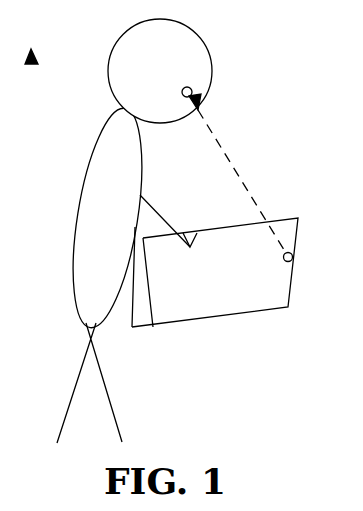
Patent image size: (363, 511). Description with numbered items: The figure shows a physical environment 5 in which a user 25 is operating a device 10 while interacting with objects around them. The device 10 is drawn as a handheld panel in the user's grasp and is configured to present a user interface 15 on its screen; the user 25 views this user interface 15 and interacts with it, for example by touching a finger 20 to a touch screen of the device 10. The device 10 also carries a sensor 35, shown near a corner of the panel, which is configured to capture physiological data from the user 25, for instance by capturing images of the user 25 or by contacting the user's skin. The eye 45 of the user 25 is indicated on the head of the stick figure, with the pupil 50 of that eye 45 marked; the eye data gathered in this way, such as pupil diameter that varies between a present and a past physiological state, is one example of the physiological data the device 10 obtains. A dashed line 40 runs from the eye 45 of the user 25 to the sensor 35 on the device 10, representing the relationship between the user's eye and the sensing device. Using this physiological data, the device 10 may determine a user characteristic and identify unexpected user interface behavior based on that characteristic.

The physical environment 5 is at (31, 49).
The device 10 is at (163, 324).
The user interface 15 is at (208, 279).
The finger 20 is at (190, 240).
The user 25 is at (75, 250).
The sensor 35 is at (292, 256).
The gaze direction line 40 is at (237, 173).
The eye 45 is at (182, 91).
The pupil 50 is at (201, 97).